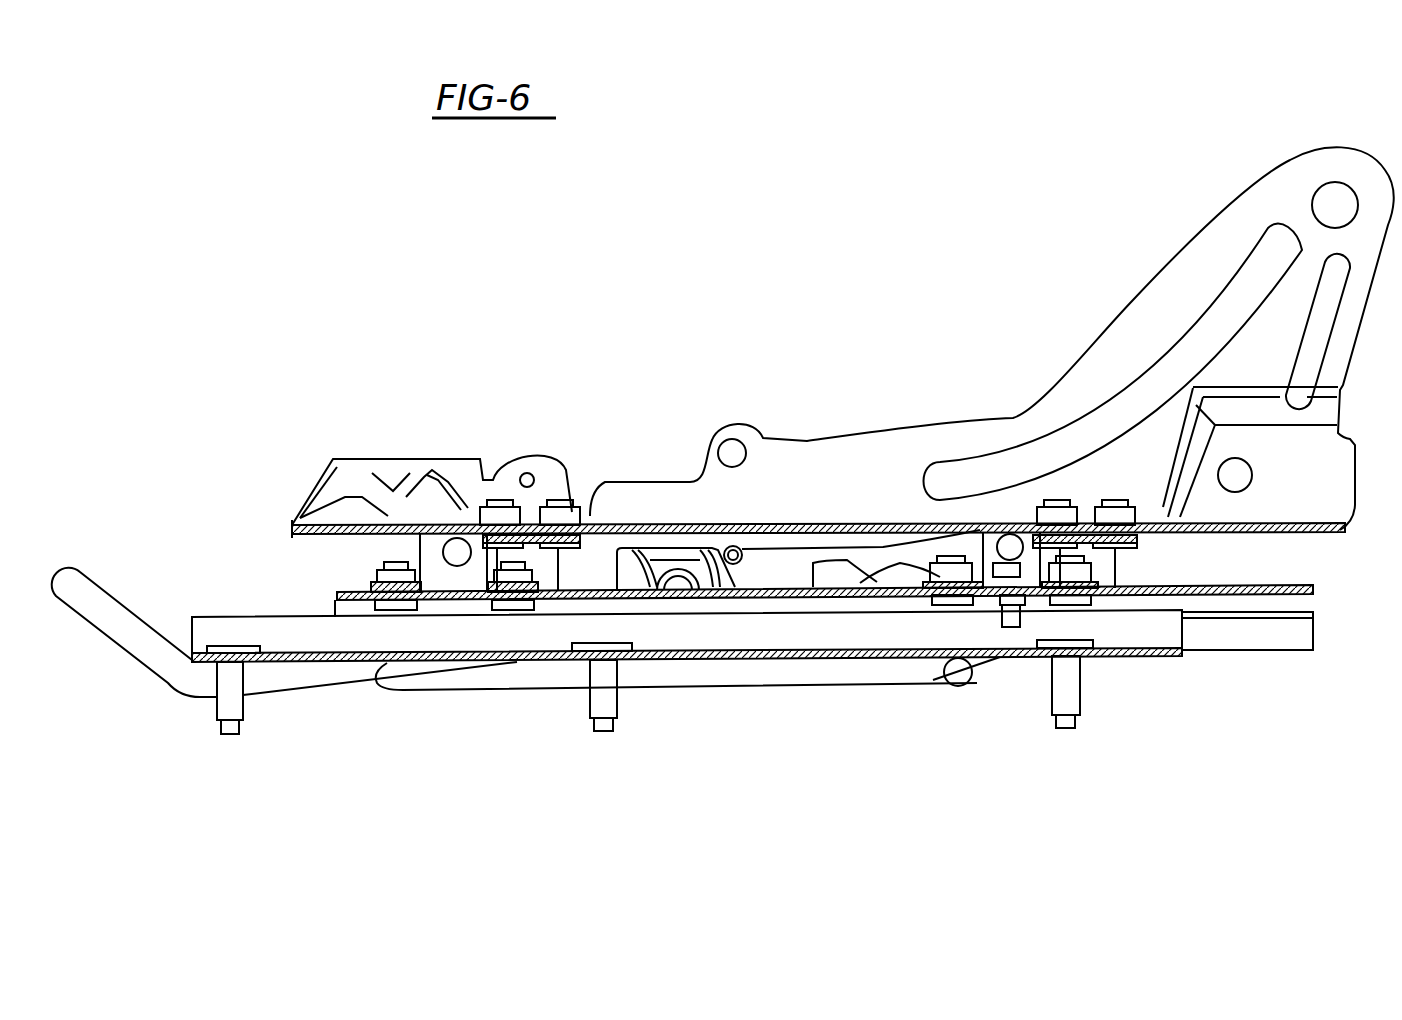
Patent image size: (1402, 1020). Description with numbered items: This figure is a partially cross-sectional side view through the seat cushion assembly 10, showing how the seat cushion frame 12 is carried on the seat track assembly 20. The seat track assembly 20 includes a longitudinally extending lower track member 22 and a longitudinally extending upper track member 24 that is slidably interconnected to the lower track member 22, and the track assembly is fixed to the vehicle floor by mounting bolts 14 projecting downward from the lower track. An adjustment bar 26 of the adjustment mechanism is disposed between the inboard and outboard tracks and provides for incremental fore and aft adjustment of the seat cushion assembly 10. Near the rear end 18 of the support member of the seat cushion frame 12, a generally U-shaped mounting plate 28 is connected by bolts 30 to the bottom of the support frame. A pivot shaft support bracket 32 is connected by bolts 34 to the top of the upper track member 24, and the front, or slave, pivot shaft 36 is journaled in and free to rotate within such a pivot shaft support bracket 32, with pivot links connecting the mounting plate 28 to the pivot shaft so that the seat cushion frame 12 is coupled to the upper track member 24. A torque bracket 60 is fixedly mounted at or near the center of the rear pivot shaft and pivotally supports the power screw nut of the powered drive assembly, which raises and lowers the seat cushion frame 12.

The seat cushion assembly 10 is at (493, 707).
The seat cushion frame 12 is at (900, 425).
The mounting bolts 14 is at (250, 722).
The rear end 18 is at (1355, 500).
The seat track assembly 20 is at (1320, 620).
The lower track member 22 is at (1152, 635).
The upper track member 24 is at (1263, 637).
The adjustment bar 26 is at (132, 643).
The mounting plate 28 is at (598, 486).
The bolts 30 is at (510, 500).
The pivot shaft support bracket 32 is at (435, 550).
The bolts 34 is at (513, 602).
The front pivot shaft 36 is at (460, 547).
The torque bracket 60 is at (880, 570).